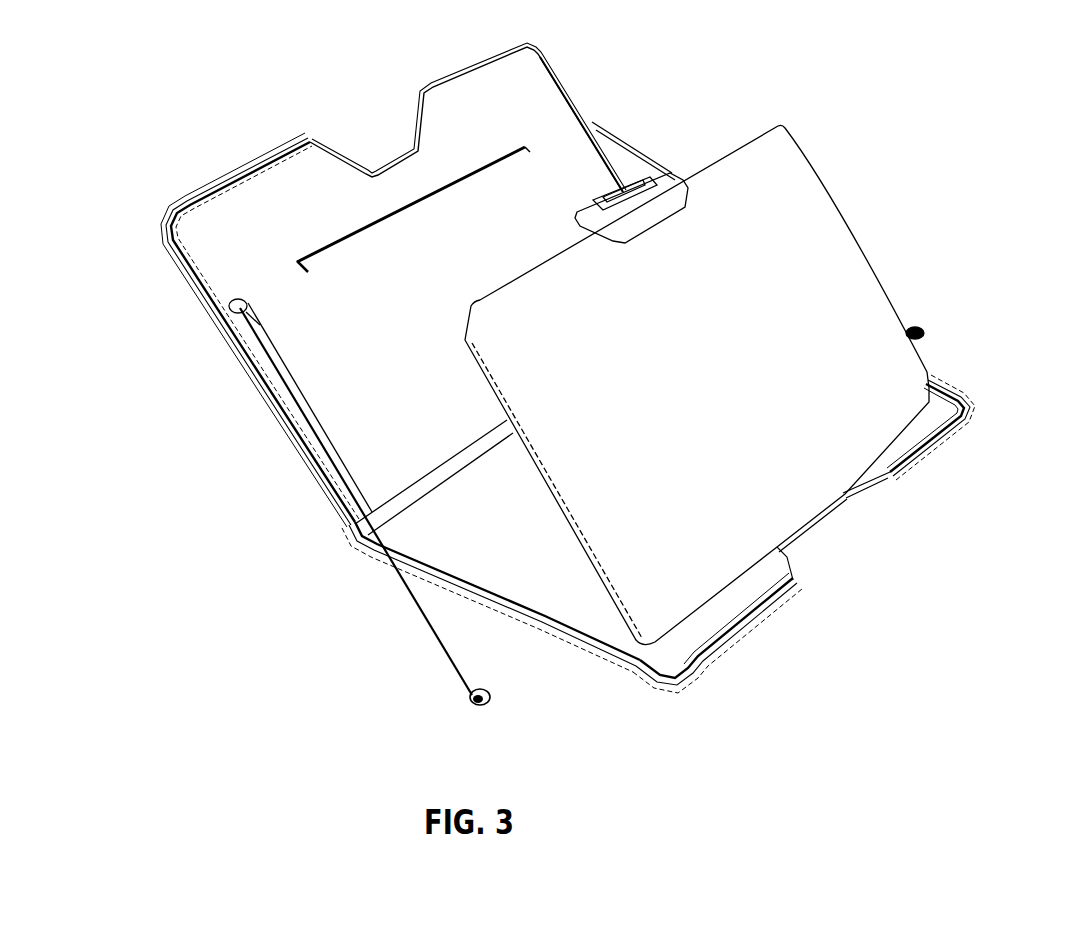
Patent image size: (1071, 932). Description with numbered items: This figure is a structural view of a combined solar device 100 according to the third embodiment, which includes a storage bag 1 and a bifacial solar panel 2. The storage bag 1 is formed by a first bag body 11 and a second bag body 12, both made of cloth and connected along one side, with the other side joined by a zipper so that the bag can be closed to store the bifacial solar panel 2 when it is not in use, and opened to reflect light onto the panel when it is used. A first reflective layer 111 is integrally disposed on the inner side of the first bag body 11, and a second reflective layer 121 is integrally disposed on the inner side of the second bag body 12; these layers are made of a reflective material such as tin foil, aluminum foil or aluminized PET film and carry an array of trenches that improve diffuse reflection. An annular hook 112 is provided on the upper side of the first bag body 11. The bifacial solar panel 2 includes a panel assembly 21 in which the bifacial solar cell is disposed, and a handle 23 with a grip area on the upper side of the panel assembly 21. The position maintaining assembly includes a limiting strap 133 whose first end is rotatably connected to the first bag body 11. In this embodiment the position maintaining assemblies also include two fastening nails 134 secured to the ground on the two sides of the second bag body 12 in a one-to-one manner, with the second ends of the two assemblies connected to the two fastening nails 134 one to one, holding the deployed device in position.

The combined solar device 100 is at (128, 52).
The storage bag 1 is at (238, 183).
The first bag body 11 is at (326, 503).
The first reflective layer 111 is at (237, 268).
The annular hook 112 is at (237, 303).
The second bag body 12 is at (537, 630).
The second reflective layer 121 is at (473, 557).
The limiting strap 133 is at (243, 332).
The fastening nail 134 is at (473, 697).
The bifacial solar panel 2 is at (812, 172).
The panel assembly 21 is at (824, 327).
The handle 23 is at (652, 182).